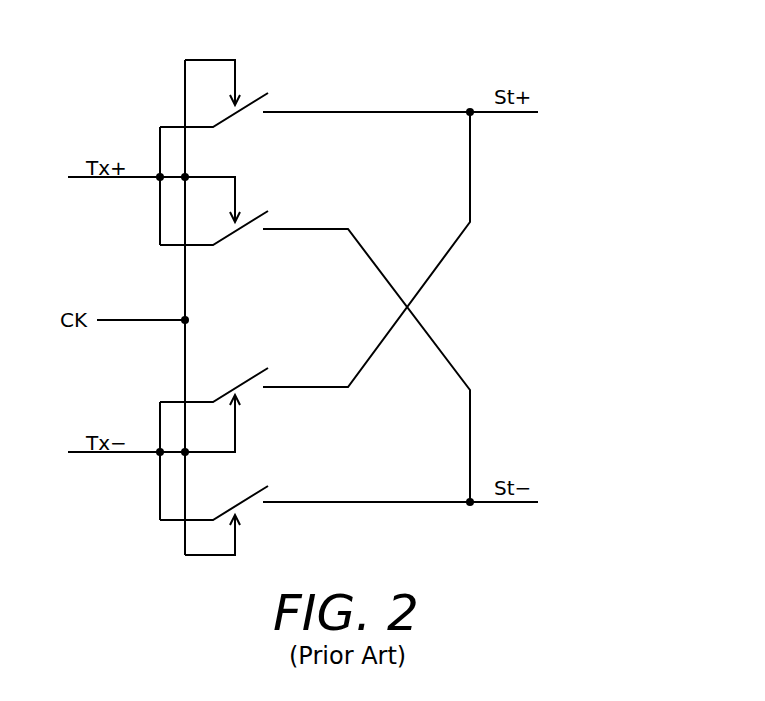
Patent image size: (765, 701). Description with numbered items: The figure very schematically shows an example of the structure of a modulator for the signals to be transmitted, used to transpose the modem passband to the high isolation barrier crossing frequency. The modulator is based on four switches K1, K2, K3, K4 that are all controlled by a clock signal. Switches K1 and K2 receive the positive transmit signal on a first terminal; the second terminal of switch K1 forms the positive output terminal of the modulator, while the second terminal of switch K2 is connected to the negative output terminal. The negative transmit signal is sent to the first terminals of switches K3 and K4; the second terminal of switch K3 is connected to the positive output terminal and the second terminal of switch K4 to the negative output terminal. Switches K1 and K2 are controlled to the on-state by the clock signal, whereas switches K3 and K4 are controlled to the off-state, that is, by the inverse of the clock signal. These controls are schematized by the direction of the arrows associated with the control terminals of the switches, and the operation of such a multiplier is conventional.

The switch K1 is at (214, 115).
The switch K2 is at (214, 234).
The switch K3 is at (214, 378).
The switch K4 is at (214, 497).